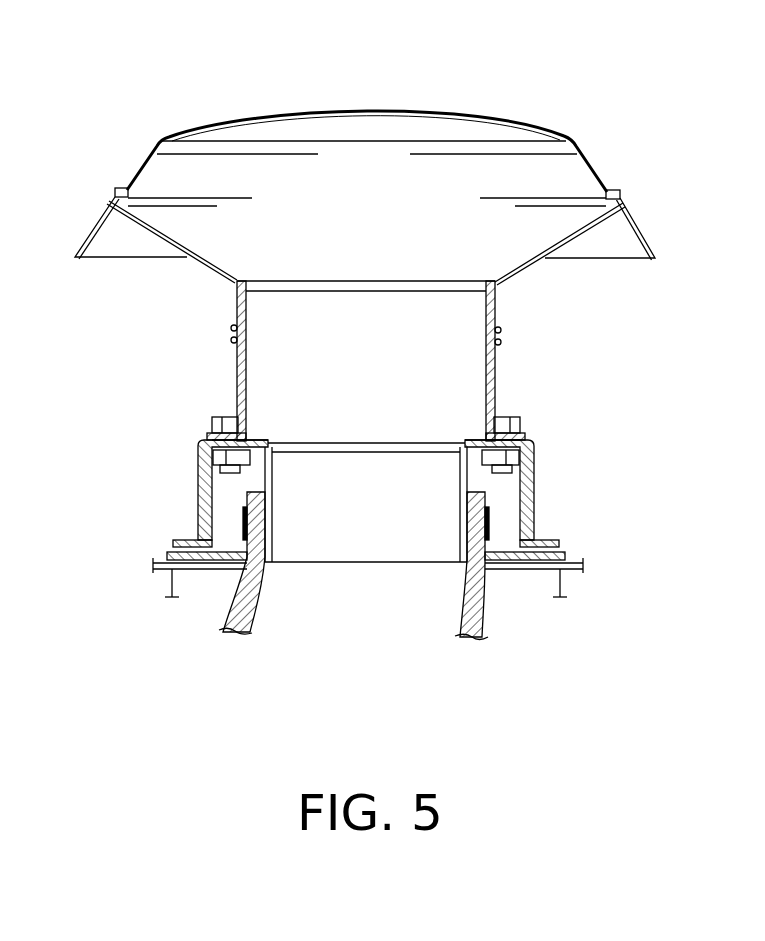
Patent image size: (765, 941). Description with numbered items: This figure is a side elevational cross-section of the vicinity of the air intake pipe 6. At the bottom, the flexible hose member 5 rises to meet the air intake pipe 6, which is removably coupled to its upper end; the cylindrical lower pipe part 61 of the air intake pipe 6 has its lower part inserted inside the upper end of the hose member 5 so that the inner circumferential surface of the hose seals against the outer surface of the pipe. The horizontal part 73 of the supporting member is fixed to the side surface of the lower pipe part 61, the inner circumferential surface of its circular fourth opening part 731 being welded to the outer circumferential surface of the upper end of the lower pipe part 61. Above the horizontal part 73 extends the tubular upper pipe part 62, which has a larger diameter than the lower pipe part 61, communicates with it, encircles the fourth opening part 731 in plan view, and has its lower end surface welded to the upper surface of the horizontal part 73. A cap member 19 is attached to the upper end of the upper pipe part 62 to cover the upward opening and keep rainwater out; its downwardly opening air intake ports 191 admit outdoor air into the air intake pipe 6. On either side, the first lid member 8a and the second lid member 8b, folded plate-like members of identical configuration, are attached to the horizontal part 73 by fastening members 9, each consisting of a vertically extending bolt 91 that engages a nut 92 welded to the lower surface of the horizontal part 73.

The cap member 19 is at (577, 142).
The air intake ports 191 is at (193, 258).
The upper pipe part 62 is at (247, 370).
The air intake pipe 6 is at (366, 502).
The lower pipe part 61 is at (462, 472).
The fourth opening part 731 is at (277, 442).
The horizontal part 73 is at (482, 445).
The first lid member 8a is at (538, 476).
The second lid member 8b is at (232, 491).
The first fastening members 9 is at (414, 404).
The bolt 91 is at (505, 420).
The nut 92 is at (507, 455).
The hose member 5 is at (453, 613).